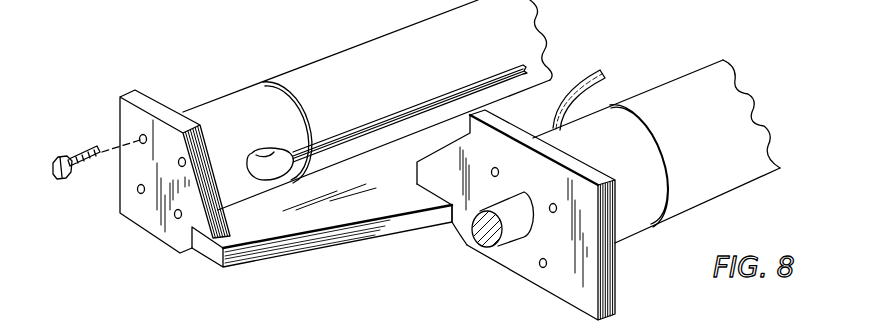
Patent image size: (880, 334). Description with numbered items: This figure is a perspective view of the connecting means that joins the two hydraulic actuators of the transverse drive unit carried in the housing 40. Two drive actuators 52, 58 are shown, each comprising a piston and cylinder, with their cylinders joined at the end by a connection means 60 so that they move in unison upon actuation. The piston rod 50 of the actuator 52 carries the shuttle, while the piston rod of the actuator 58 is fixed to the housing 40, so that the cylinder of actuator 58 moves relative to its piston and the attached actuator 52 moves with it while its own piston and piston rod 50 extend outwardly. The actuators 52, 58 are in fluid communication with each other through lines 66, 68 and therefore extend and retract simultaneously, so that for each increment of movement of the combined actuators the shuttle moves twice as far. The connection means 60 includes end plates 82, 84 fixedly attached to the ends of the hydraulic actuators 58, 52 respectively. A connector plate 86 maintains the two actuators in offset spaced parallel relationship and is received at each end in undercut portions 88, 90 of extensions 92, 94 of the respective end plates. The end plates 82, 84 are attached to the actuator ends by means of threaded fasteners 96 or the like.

The housing 40 is at (416, 167).
The piston rod 50 is at (483, 244).
The drive actuator 52 is at (671, 86).
The drive actuator 58 is at (331, 54).
The connection means 60 is at (302, 227).
The line 66 is at (497, 72).
The line 68 is at (583, 85).
The end plate 82 is at (161, 97).
The end plate 84 is at (608, 280).
The connector plate 86 is at (360, 229).
The undercut portion 88 is at (202, 237).
The undercut portion 90 is at (437, 197).
The extension 92 is at (216, 219).
The extension 94 is at (430, 171).
The threaded fastener 96 is at (75, 155).